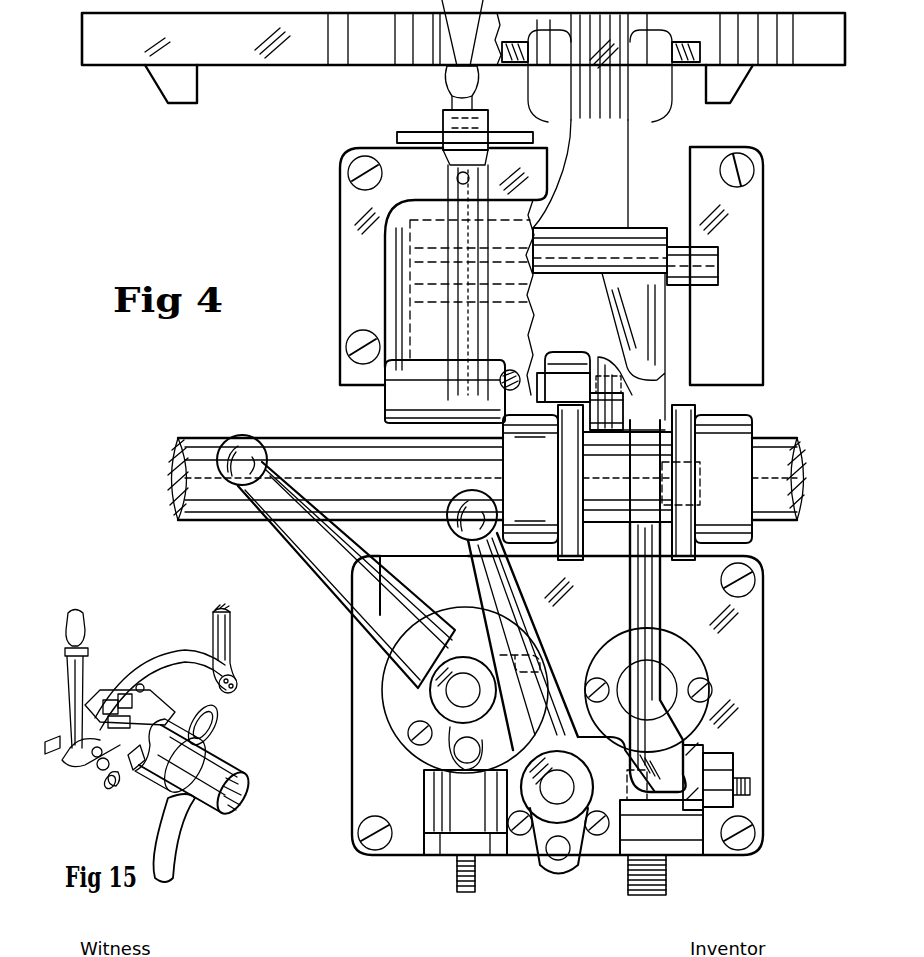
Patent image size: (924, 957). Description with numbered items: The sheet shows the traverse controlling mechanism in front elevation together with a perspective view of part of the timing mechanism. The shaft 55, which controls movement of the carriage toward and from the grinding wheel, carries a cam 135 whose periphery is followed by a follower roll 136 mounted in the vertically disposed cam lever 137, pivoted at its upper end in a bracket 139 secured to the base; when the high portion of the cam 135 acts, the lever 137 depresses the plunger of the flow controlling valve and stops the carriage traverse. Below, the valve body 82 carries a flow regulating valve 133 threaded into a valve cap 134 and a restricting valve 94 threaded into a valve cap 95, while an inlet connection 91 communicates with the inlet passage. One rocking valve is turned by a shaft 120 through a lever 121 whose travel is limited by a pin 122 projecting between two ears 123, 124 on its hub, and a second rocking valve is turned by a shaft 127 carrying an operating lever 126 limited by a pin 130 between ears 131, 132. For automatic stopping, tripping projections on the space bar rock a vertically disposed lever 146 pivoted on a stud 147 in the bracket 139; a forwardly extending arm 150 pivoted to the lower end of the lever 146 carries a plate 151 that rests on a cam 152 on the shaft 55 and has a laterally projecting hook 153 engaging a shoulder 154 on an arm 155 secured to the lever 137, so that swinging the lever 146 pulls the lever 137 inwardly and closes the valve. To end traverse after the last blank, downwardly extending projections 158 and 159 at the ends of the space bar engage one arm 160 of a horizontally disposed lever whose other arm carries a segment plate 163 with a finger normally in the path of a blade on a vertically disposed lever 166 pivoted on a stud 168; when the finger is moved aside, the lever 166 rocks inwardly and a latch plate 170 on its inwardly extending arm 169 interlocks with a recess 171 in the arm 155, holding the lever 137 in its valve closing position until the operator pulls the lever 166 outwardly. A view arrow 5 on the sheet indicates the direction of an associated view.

In FIG. 4, the downwardly extending projection 158 is at (185, 92).
In FIG. 4, the downwardly extending projection 159 is at (730, 92).
In FIG. 4, the vertically disposed lever 166 is at (457, 47).
In FIG. 15, the vertically disposed lever 166 is at (108, 781).
In FIG. 4, the arm of horizontally disposed lever 160 is at (443, 97).
In FIG. 4, the segment plate 163 is at (530, 127).
In FIG. 4, the vertically disposed lever 146 is at (623, 147).
In FIG. 15, the vertically disposed lever 146 is at (222, 640).
In FIG. 4, the bracket 139 is at (400, 240).
In FIG. 4, the stud 147 is at (718, 267).
In FIG. 4, the laterally projecting hook 153 is at (613, 387).
In FIG. 15, the laterally projecting hook 153 is at (123, 694).
In FIG. 4, the stud 168 is at (520, 380).
In FIG. 15, the stud 168 is at (110, 790).
In FIG. 4, the forwardly extending arm 150 is at (565, 362).
In FIG. 15, the forwardly extending arm 150 is at (180, 658).
In FIG. 4, the plate 151 is at (563, 387).
In FIG. 15, the plate 151 is at (112, 716).
In FIG. 4, the forwardly projecting arm 155 is at (617, 423).
In FIG. 15, the forwardly projecting arm 155 is at (130, 772).
In FIG. 4, the recess 171 is at (617, 408).
In FIG. 15, the recess 171 is at (98, 768).
In FIG. 4, the cam 135 is at (683, 447).
In FIG. 15, the cam 135 is at (148, 795).
In FIG. 4, the follower roll 136 is at (700, 467).
In FIG. 15, the follower roll 136 is at (212, 718).
In FIG. 4, the shaft 55 is at (790, 480).
In FIG. 15, the shaft 55 is at (205, 808).
In FIG. 4, the cam 152 is at (568, 482).
In FIG. 15, the cam 152 is at (108, 700).
In FIG. 4, the operating lever 126 is at (316, 571).
In FIG. 4, the lever 121 is at (522, 632).
In FIG. 4, the ear 132 is at (535, 660).
In FIG. 4, the cam lever 137 is at (650, 613).
In FIG. 15, the cam lever 137 is at (163, 843).
In FIG. 4, the shaft 127 is at (455, 698).
In FIG. 4, the valve body 82 is at (402, 735).
In FIG. 4, the ear 131 is at (440, 748).
In FIG. 4, the pin 130 is at (433, 812).
In FIG. 4, the valve cap 134 is at (436, 850).
In FIG. 4, the valve 133 is at (468, 890).
In FIG. 4, the shaft 120 is at (552, 793).
In FIG. 4, the ear 123 is at (547, 850).
In FIG. 4, the pin 122 is at (560, 858).
In FIG. 4, the ear 124 is at (613, 812).
In FIG. 4, the inlet connection 91 is at (650, 908).
In FIG. 4, the valve 94 is at (743, 780).
In FIG. 4, the valve cap 95 is at (735, 800).
In FIG. 4, the section view indicator 5 is at (778, 903).
In FIG. 15, the shoulder 154 is at (142, 684).
In FIG. 15, the inwardly extending arm 169 is at (72, 760).
In FIG. 15, the latch plate 170 is at (94, 757).